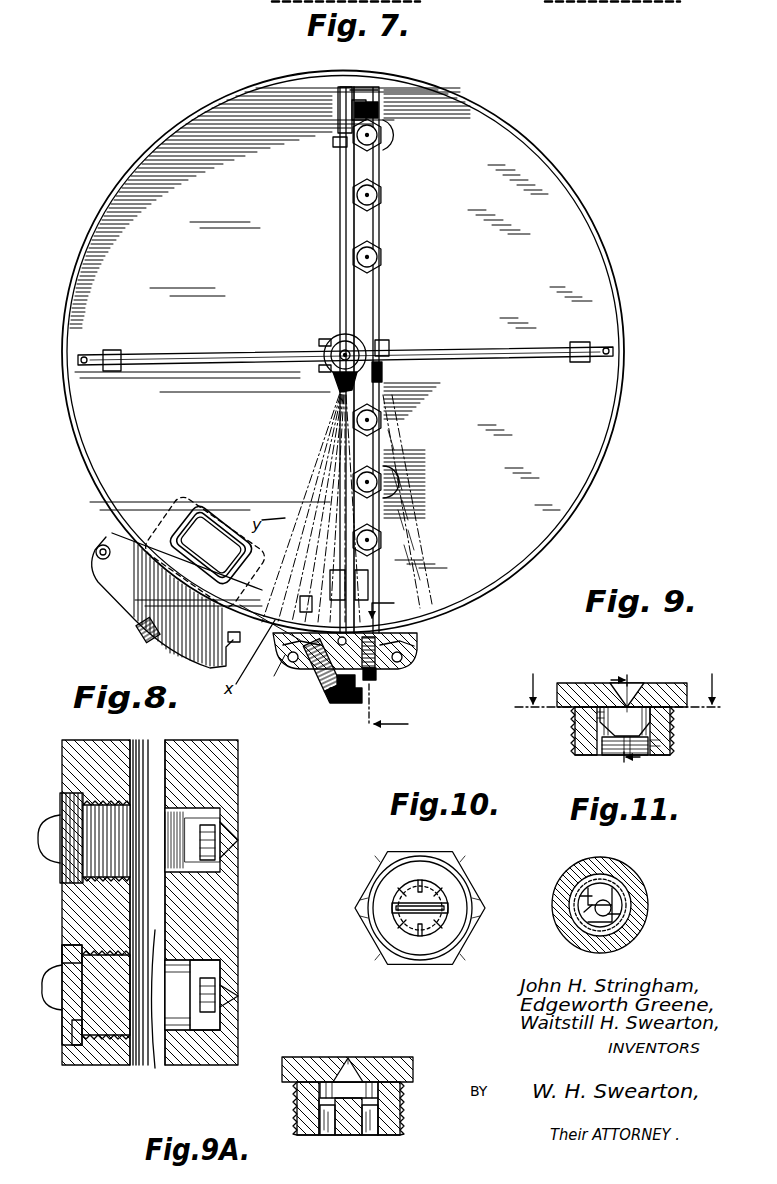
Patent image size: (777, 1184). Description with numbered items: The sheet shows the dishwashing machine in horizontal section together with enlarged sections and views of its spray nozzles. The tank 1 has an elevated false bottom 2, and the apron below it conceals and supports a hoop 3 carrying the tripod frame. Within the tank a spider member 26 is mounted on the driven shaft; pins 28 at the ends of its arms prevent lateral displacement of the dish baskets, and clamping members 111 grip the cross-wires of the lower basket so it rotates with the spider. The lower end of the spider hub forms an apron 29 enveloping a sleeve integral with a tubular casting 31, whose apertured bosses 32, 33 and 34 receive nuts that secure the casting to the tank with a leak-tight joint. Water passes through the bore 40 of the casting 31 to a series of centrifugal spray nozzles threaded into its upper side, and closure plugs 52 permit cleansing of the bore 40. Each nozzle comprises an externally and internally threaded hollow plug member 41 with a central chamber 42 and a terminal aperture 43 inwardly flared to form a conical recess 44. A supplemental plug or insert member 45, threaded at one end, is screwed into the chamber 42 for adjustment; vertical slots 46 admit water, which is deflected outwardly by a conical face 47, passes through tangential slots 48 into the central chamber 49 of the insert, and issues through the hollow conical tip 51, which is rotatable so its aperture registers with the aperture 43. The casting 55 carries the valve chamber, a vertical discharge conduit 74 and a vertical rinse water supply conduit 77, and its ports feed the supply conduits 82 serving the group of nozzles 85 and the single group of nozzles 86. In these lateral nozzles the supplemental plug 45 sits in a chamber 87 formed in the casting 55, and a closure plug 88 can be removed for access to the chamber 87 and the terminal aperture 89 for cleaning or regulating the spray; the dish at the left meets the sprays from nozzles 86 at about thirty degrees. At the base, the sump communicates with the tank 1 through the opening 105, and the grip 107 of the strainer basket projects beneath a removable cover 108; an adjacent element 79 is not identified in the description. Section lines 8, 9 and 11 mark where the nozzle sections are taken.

In FIG. 7, the tank 1 is at (570, 206).
In FIG. 7, the bottom 2 is at (600, 262).
In FIG. 7, the hoop 3 is at (412, 558).
In FIG. 7, the section line 8 is at (395, 665).
In FIG. 7, the section line 9 is at (340, 262).
In FIG. 9, the section line 11 is at (617, 695).
In FIG. 7, the spider member 26 is at (290, 352).
In FIG. 7, the pins 28 is at (350, 98).
In FIG. 7, the apron 29 is at (362, 338).
In FIG. 7, the tubular casting 31 is at (384, 378).
In FIG. 7, the apertured boss 32 is at (395, 128).
In FIG. 7, the apertured boss 33 is at (325, 370).
In FIG. 7, the apertured boss 34 is at (400, 474).
In FIG. 9A, the bore or conduit 40 is at (368, 1136).
In FIG. 7, the hollow plug member 41 is at (380, 196).
In FIG. 9, the hollow plug member 41 is at (582, 690).
In FIG. 10, the hollow plug member 41 is at (418, 963).
In FIG. 11, the hollow plug member 41 is at (640, 932).
In FIG. 9A, the hollow plug member 41 is at (306, 1057).
In FIG. 9, the central chamber 42 is at (600, 728).
In FIG. 11, the central chamber 42 is at (620, 888).
In FIG. 9, the terminal aperture 43 is at (628, 684).
In FIG. 9A, the terminal aperture 43 is at (350, 1058).
In FIG. 9, the conical recess 44 is at (652, 690).
In FIG. 9A, the conical recess 44 is at (395, 1064).
In FIG. 8, the supplemental plug or insert member 45 is at (220, 830).
In FIG. 9, the supplemental plug or insert member 45 is at (650, 716).
In FIG. 10, the supplemental plug or insert member 45 is at (398, 930).
In FIG. 11, the supplemental plug or insert member 45 is at (612, 885).
In FIG. 9A, the supplemental plug or insert member 45 is at (300, 1096).
In FIG. 8, the vertical slots 46 is at (175, 835).
In FIG. 9, the vertical slots 46 is at (612, 756).
In FIG. 10, the vertical slots 46 is at (440, 906).
In FIG. 9, the conical face 47 is at (650, 738).
In FIG. 9A, the conical face 47 is at (300, 1112).
In FIG. 8, the tangential slots 48 is at (215, 852).
In FIG. 9, the tangential slots 48 is at (600, 716).
In FIG. 11, the tangential slots 48 is at (578, 904).
In FIG. 9A, the tangential slots 48 is at (400, 1090).
In FIG. 11, the central chamber 49 is at (584, 940).
In FIG. 9, the hollow conical tip 51 is at (632, 692).
In FIG. 9A, the hollow conical tip 51 is at (365, 1070).
In FIG. 7, the closure plugs 52 is at (378, 100).
In FIG. 7, the casting 55 is at (418, 640).
In FIG. 8, the casting 55 is at (62, 778).
In FIG. 7, the vertical discharge conduit 74 is at (288, 660).
In FIG. 7, the fresh or rinse water supply conduit 77 is at (410, 660).
In FIG. 7, the pivot block 79 is at (343, 704).
In FIG. 7, the feed supply conduits 82 is at (320, 676).
In FIG. 8, the feed supply conduits 82 is at (140, 748).
In FIG. 7, the group of centrifugal nozzles 85 is at (377, 680).
In FIG. 8, the group of centrifugal nozzles 85 is at (60, 876).
In FIG. 7, the group of centrifugal nozzles 86 is at (322, 694).
In FIG. 8, the chamber 87 is at (215, 964).
In FIG. 8, the closure plug 88 is at (62, 952).
In FIG. 8, the terminal aperture 89 is at (225, 996).
In FIG. 7, the opening 105 is at (195, 505).
In FIG. 7, the grip 107 is at (138, 624).
In FIG. 7, the removable cover 108 is at (110, 585).
In FIG. 7, the clamping members 111 is at (340, 120).